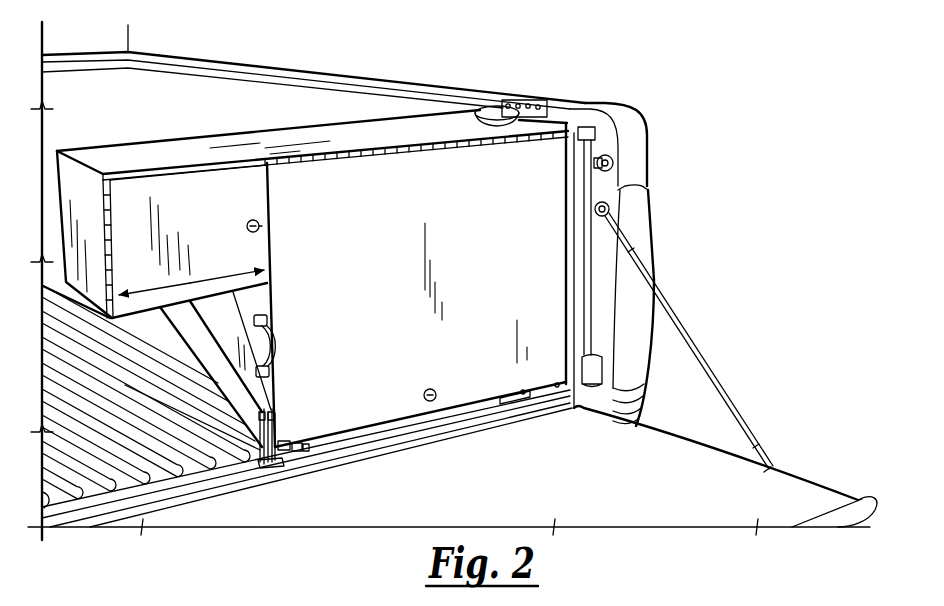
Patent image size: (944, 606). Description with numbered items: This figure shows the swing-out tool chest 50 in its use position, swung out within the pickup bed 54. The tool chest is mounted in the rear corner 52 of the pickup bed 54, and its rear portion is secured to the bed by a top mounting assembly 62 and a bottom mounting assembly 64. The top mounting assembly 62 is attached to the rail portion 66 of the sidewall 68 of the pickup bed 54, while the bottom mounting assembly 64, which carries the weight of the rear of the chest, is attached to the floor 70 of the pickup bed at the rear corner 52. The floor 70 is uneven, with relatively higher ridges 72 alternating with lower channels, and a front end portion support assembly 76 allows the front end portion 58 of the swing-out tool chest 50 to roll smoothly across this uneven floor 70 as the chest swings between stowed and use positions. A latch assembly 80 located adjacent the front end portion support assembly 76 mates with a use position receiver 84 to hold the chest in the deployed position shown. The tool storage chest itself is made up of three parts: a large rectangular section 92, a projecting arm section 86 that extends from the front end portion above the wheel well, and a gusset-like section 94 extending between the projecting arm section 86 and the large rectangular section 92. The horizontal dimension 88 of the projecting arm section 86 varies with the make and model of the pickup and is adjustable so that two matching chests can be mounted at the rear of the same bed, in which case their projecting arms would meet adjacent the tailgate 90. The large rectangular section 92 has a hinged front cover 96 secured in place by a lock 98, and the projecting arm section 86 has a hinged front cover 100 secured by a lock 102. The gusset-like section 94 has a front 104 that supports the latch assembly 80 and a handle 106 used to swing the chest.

The swing-out tool chest 50 is at (315, 125).
The rear corner 52 is at (654, 93).
The pickup bed 54 is at (265, 47).
The front end portion 58 is at (198, 130).
The top mounting assembly 62 is at (537, 85).
The bottom mounting assembly 64 is at (551, 403).
The rail portion 66 is at (575, 112).
The sidewall 68 is at (420, 93).
The floor 70 is at (233, 461).
The ridges 72 is at (148, 366).
The front end portion support assembly 76 is at (311, 452).
The latch assembly 80 is at (281, 410).
The use position receiver 84 is at (275, 462).
The projecting arm section 86 is at (131, 138).
The horizontal dimension 88 is at (208, 287).
The tailgate 90 is at (833, 474).
The large rectangular section 92 is at (591, 250).
The gusset-like section 94 is at (288, 305).
The hinged front cover 96 is at (479, 246).
The lock 98 is at (432, 388).
The hinged front cover 100 is at (231, 209).
The lock 102 is at (258, 218).
The front 104 is at (239, 328).
The handle 106 is at (273, 338).